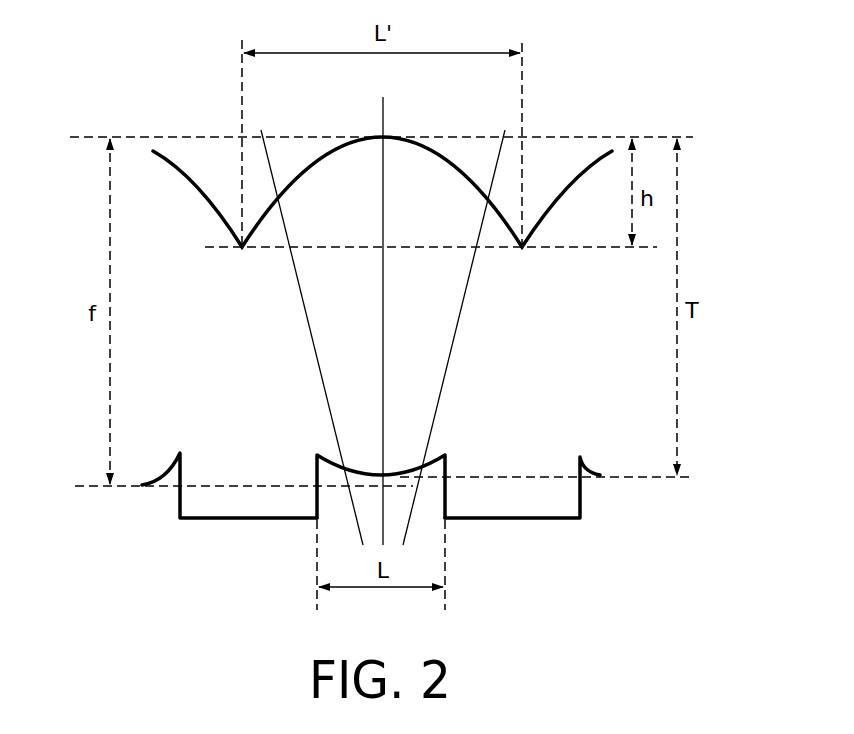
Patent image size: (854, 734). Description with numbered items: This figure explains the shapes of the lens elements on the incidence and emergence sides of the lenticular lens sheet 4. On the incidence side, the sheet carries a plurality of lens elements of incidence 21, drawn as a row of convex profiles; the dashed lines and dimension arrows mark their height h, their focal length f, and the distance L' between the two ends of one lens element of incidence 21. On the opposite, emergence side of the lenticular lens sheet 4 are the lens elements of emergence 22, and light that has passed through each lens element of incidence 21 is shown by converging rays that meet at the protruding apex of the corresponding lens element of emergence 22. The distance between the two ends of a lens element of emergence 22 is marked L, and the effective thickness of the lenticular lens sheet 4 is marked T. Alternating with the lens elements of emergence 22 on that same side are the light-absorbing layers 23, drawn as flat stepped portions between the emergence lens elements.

The lenticular lens sheet 4 is at (577, 123).
The lens element of incidence 21 is at (452, 163).
The lens element of emergence 22 is at (358, 472).
The light-absorbing layer 23 is at (537, 520).